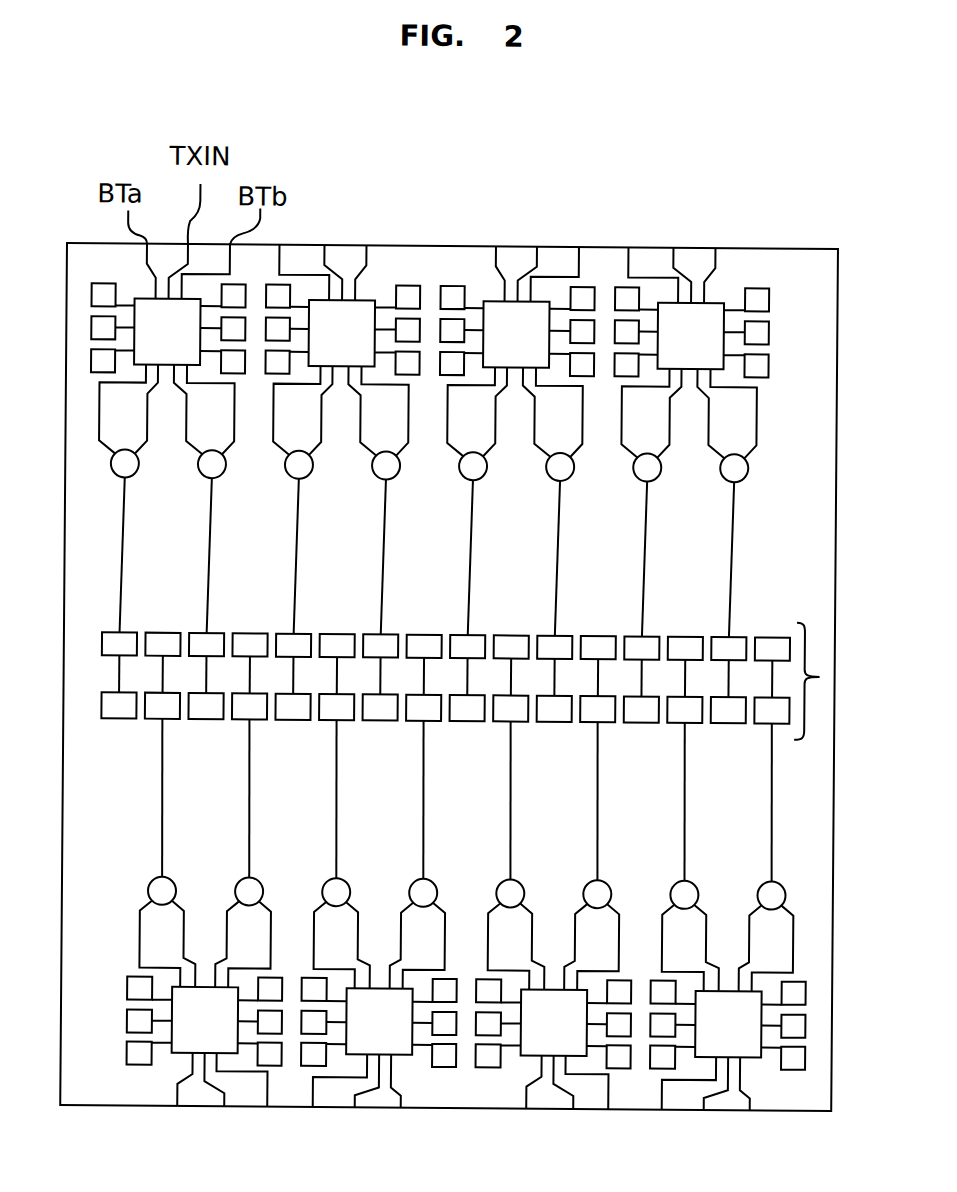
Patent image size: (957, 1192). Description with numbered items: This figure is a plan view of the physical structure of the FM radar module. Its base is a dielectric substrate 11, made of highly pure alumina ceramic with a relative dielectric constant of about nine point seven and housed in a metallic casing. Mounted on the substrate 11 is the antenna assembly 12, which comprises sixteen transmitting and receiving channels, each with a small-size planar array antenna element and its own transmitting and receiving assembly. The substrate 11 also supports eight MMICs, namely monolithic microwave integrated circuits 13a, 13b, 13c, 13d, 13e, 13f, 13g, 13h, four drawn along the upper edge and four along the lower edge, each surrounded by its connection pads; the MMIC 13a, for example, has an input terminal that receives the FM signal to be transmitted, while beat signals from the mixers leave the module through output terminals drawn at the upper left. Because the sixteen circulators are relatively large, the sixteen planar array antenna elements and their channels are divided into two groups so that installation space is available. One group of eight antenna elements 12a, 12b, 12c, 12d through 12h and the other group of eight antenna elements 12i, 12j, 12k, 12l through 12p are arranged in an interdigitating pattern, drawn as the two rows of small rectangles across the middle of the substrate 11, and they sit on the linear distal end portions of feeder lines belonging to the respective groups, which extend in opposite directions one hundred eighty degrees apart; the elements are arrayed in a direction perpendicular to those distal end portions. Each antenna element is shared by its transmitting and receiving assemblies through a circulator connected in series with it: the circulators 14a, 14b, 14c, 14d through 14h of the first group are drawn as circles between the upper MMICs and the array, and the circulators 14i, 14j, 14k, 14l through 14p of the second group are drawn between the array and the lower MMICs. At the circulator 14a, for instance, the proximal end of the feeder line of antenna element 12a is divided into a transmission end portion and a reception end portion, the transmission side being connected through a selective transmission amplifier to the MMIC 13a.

The dielectric substrate 11 is at (790, 1097).
The antenna assembly 12 is at (489, 670).
The planar array antenna element 12a is at (124, 733).
The planar array antenna element 12b is at (207, 729).
The planar array antenna element 12c is at (297, 728).
The planar array antenna element 12d is at (384, 727).
The planar array antenna element 12h is at (730, 731).
The planar array antenna element 12i is at (169, 611).
The planar array antenna element 12j is at (257, 611).
The planar array antenna element 12k is at (343, 612).
The planar array antenna element 12l is at (435, 612).
The planar array antenna element 12p is at (778, 617).
The MMIC 13a is at (168, 308).
The MMIC 13b is at (342, 310).
The MMIC 13c is at (517, 311).
The MMIC 13d is at (691, 312).
The MMIC 13e is at (204, 1041).
The MMIC 13f is at (379, 1043).
The MMIC 13g is at (553, 1044).
The MMIC 13h is at (728, 1046).
The circulator 14a is at (134, 464).
The circulator 14b is at (221, 465).
The circulator 14c is at (308, 464).
The circulator 14d is at (395, 463).
The circulator 14h is at (740, 469).
The circulator 14i is at (157, 884).
The circulator 14j is at (244, 884).
The circulator 14k is at (331, 883).
The circulator 14l is at (418, 883).
The circulator 14p is at (770, 885).